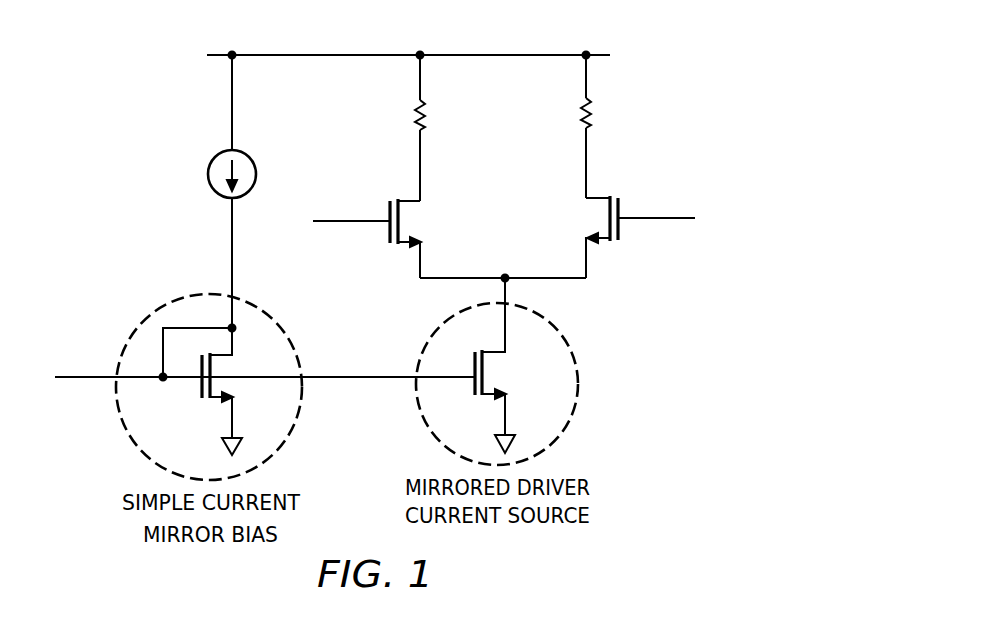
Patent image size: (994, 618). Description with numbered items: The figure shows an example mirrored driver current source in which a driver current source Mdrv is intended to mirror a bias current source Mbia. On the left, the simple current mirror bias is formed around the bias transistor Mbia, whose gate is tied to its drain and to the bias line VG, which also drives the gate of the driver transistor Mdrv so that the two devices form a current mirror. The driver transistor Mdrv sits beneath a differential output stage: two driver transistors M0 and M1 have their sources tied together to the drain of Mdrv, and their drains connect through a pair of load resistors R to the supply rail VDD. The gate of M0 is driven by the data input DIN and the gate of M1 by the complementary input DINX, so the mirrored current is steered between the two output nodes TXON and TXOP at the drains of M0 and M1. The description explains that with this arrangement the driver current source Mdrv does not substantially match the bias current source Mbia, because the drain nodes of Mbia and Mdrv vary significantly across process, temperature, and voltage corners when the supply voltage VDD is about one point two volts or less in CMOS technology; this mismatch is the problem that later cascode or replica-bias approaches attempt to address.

The supply voltage rail VDD is at (408, 44).
The load resistor R is at (514, 92).
The transmit output node N TXON is at (450, 165).
The transmit output node P TXOP is at (615, 163).
The data input DIN is at (351, 207).
The complementary data input DINX is at (656, 205).
The driver transistor M0 is at (422, 238).
The driver transistor M1 is at (586, 237).
The bias current source Mbia is at (236, 387).
The driver current source Mdrv is at (524, 371).
The gate bias voltage VG is at (265, 363).